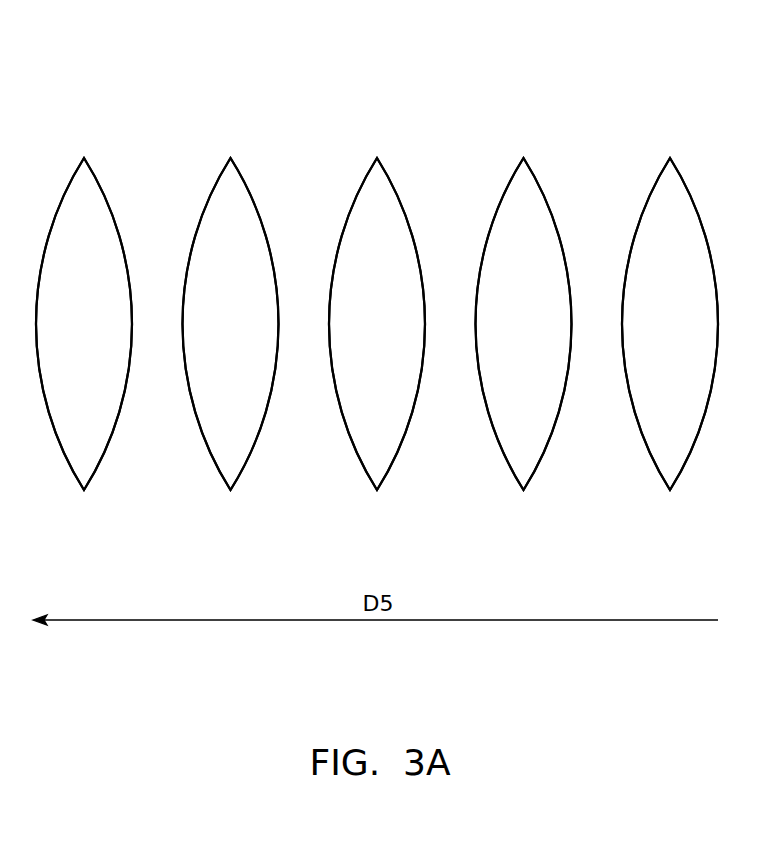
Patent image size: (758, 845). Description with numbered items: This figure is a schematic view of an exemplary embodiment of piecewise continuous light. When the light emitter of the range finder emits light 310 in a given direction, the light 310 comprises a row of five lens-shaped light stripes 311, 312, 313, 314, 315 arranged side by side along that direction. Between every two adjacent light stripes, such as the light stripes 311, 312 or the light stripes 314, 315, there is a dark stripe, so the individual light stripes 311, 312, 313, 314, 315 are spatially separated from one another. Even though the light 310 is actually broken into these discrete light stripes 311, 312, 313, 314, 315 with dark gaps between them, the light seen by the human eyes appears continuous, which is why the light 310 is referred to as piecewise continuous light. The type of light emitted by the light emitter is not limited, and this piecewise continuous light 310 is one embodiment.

The light 310 is at (631, 83).
The light stripe 311 is at (671, 478).
The light stripe 312 is at (524, 478).
The light stripe 313 is at (378, 478).
The light stripe 314 is at (232, 478).
The light stripe 315 is at (85, 478).